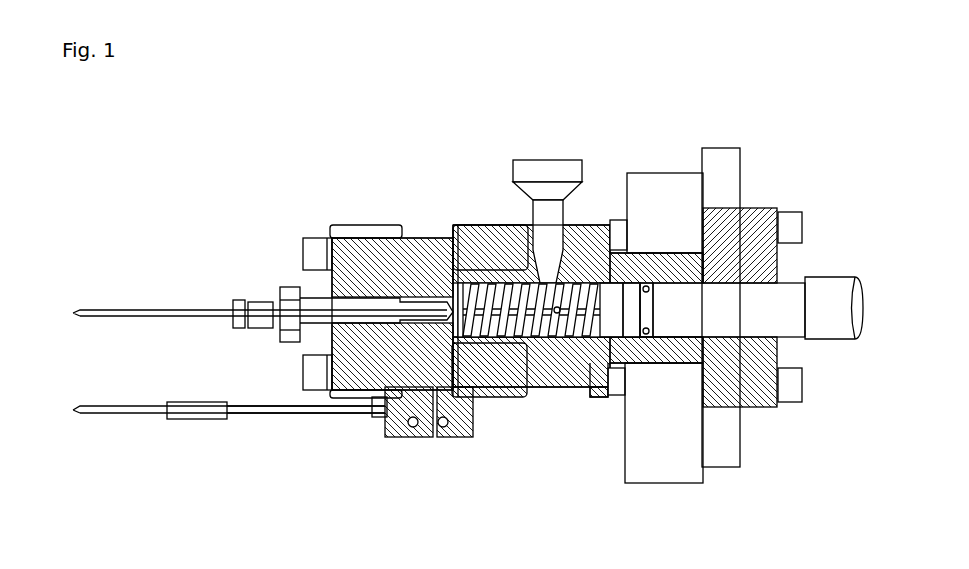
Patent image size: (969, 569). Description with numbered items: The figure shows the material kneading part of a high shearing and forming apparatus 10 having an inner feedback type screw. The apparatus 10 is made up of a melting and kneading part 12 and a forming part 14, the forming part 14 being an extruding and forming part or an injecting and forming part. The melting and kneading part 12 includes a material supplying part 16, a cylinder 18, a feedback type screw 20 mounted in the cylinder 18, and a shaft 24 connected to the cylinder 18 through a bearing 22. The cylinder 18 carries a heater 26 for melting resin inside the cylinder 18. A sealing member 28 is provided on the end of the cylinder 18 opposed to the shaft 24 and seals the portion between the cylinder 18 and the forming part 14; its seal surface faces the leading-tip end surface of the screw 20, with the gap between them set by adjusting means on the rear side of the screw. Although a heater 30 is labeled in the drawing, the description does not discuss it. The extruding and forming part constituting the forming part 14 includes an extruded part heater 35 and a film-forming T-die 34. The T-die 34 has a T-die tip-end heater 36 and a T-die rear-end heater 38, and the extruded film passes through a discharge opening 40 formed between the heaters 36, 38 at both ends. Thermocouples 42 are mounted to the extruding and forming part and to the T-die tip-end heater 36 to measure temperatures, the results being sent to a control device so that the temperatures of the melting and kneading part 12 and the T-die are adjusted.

The high shearing and forming apparatus 10 is at (425, 160).
The melting and kneading part 12 is at (622, 155).
The forming part 14 is at (290, 213).
The material supplying part 16 is at (548, 158).
The cylinder 18 is at (582, 398).
The feedback type screw 20 is at (545, 398).
The bearing 22 is at (642, 367).
The shaft 24 is at (832, 282).
The heater 26 is at (488, 398).
The sealing member 28 is at (447, 260).
The heater 30 is at (475, 224).
The film-forming T-die 34 is at (472, 437).
The extruded part heater 35 is at (348, 408).
The T-die tip-end heater 36 is at (412, 437).
The T-die rear-end heater 38 is at (450, 437).
The discharge opening 40 is at (437, 437).
The thermocouples 42 is at (175, 308).